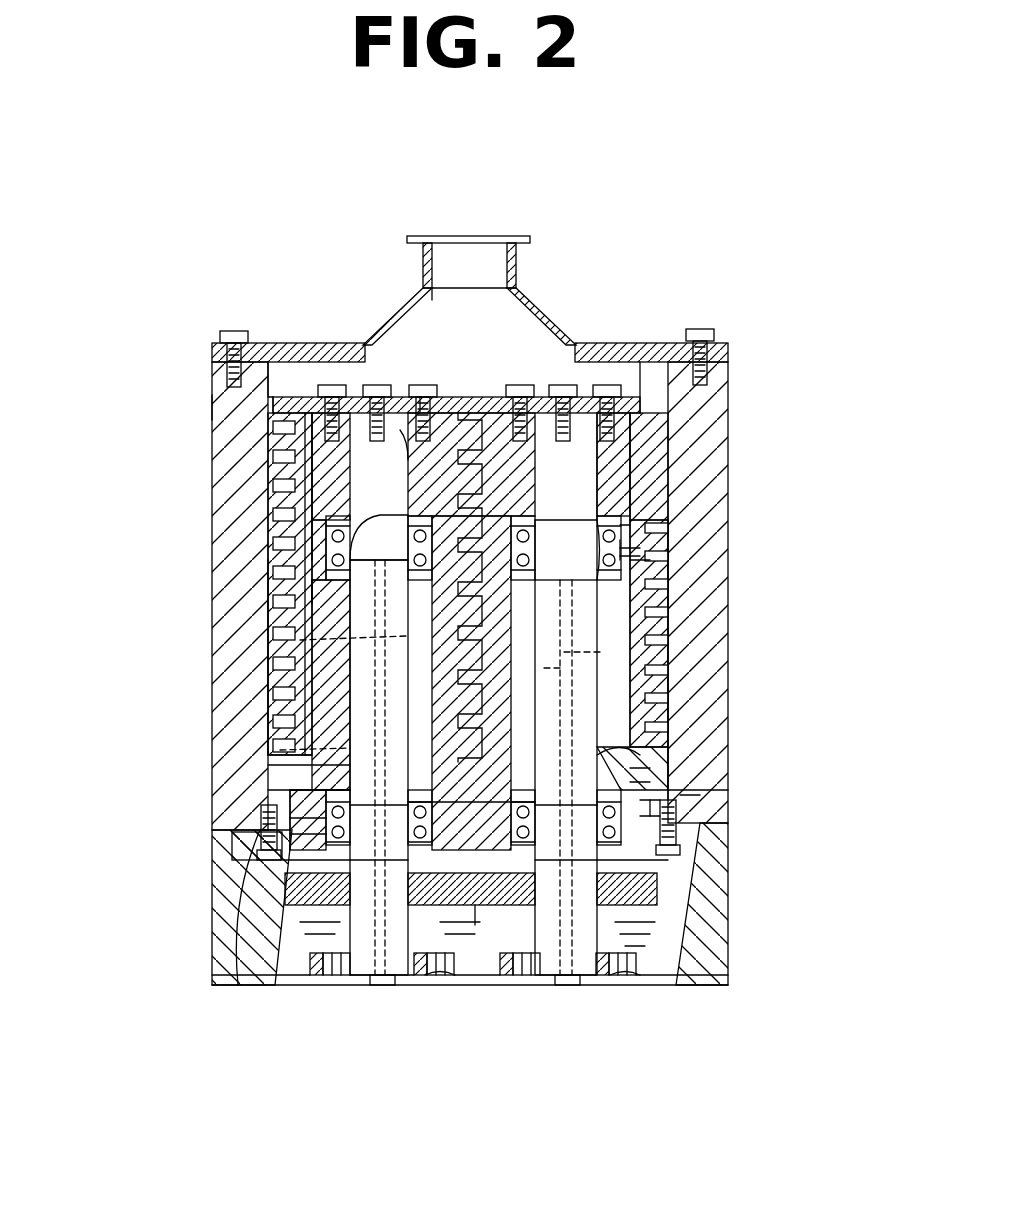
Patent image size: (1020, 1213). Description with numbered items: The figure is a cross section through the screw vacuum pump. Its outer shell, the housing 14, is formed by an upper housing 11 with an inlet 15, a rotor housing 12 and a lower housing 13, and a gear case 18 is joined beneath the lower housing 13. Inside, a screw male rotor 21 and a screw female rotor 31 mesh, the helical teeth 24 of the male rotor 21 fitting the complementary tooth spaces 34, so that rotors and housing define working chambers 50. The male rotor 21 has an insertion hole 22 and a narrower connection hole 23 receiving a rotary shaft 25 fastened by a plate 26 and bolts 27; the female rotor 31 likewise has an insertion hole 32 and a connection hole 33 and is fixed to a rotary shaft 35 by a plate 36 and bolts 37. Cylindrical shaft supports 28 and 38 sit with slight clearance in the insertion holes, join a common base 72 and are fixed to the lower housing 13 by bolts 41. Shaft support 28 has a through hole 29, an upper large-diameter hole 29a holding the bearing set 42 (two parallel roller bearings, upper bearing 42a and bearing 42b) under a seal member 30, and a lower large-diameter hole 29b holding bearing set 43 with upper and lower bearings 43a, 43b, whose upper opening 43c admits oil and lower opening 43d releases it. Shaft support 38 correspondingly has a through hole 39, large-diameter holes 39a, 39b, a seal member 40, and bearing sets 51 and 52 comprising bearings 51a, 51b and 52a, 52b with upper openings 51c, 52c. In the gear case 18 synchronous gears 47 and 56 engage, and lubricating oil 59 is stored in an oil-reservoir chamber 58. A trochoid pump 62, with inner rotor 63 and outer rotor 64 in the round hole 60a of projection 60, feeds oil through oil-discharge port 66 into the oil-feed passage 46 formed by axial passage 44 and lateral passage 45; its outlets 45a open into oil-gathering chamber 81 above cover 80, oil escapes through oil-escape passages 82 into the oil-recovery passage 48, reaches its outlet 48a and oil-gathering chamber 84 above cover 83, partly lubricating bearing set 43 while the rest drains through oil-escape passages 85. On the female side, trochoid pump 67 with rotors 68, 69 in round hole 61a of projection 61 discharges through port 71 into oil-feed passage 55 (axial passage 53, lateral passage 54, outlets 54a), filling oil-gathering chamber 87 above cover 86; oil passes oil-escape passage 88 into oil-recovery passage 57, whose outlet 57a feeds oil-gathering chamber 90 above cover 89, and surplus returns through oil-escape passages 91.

The upper housing 11 is at (556, 318).
The rotor housing 12 is at (730, 405).
The lower housing 13 is at (650, 786).
The housing 14 is at (198, 404).
The inlet 15 is at (446, 245).
The gear case 18 is at (730, 888).
The screw male rotor 21 is at (290, 394).
The insertion hole 22 is at (283, 680).
The connection hole 23 is at (276, 440).
The teeth 24 is at (276, 470).
The rotary shaft 25 is at (283, 728).
The plate 26 is at (336, 344).
The bolts 27 is at (405, 405).
The shaft support 28 is at (283, 660).
The through hole 29 is at (283, 775).
The upper large-diameter hole 29a is at (300, 548).
The lower large-diameter hole 29b is at (300, 870).
The seal member 30 is at (332, 536).
The screw female rotor 31 is at (636, 394).
The insertion hole 32 is at (685, 610).
The connection hole 33 is at (541, 394).
The tooth spaces 34 is at (715, 440).
The rotary shaft 35 is at (650, 718).
The plate 36 is at (586, 385).
The bolts 37 is at (518, 394).
The shaft support 38 is at (668, 640).
The through hole 39 is at (670, 738).
The upper large-diameter hole 39a is at (655, 540).
The lower large-diameter hole 39b is at (640, 866).
The seal member 40 is at (670, 512).
The bolts 41 is at (265, 860).
The bearing set 42 is at (177, 592).
The upper bearing 42a is at (340, 588).
The seal ring 42b is at (340, 598).
The bearing set 43 is at (167, 848).
The upper bearing 43a is at (328, 824).
The lower bearing 43b is at (328, 834).
The upper opening 43c is at (328, 818).
The lower opening 43d is at (300, 880).
The axial passage 44 is at (280, 750).
The lateral passage 45 is at (283, 490).
The outlets 45a is at (330, 545).
The oil-feed passage 46 is at (300, 640).
The synchronous gear 47 is at (250, 946).
The oil-recovery passage 48 is at (352, 606).
The outlet 48a is at (512, 840).
The working chambers 50 is at (268, 420).
The bearing set 51 is at (762, 547).
The upper bearing 51a is at (625, 552).
The lower bearing 51b is at (622, 560).
The upper opening 51c is at (622, 530).
The bearing set 52 is at (771, 807).
The upper bearing 52a is at (640, 802).
The lower bearing 52b is at (640, 816).
The upper opening 52c is at (700, 792).
The axial passage 53 is at (560, 668).
The lateral passage 54 is at (660, 495).
The outlets 54a is at (632, 485).
The oil-feed passage 55 is at (600, 652).
The synchronous gear 56 is at (650, 935).
The oil-recovery passage 57 is at (612, 580).
The outlet 57a is at (640, 755).
The oil-reservoir chamber 58 is at (310, 888).
The lubricating oil 59 is at (278, 985).
The cylindrical projection 60 is at (446, 988).
The round hole 60a is at (434, 990).
The projection 61 is at (632, 988).
The round hole 61a is at (625, 990).
The trochoid pump 62 is at (424, 988).
The inner rotor 63 is at (348, 988).
The outer rotor 64 is at (320, 988).
The oil-discharge port 66 is at (378, 990).
The trochoid pump 67 is at (601, 988).
The inner rotor 68 is at (538, 988).
The outer rotor 69 is at (505, 988).
The oil-discharge port 71 is at (562, 990).
The base 72 is at (470, 912).
The cover 80 is at (410, 430).
The oil-gathering chamber 81 is at (428, 385).
The oil-escape passages 82 is at (433, 292).
The cover 83 is at (310, 810).
The oil-gathering chamber 84 is at (330, 797).
The oil-escape passages 85 is at (445, 835).
The cover 86 is at (615, 510).
The oil-gathering chamber 87 is at (612, 478).
The oil-escape passage 88 is at (640, 568).
The cover 89 is at (640, 768).
The oil-gathering chamber 90 is at (640, 782).
The oil-escape passages 91 is at (600, 828).